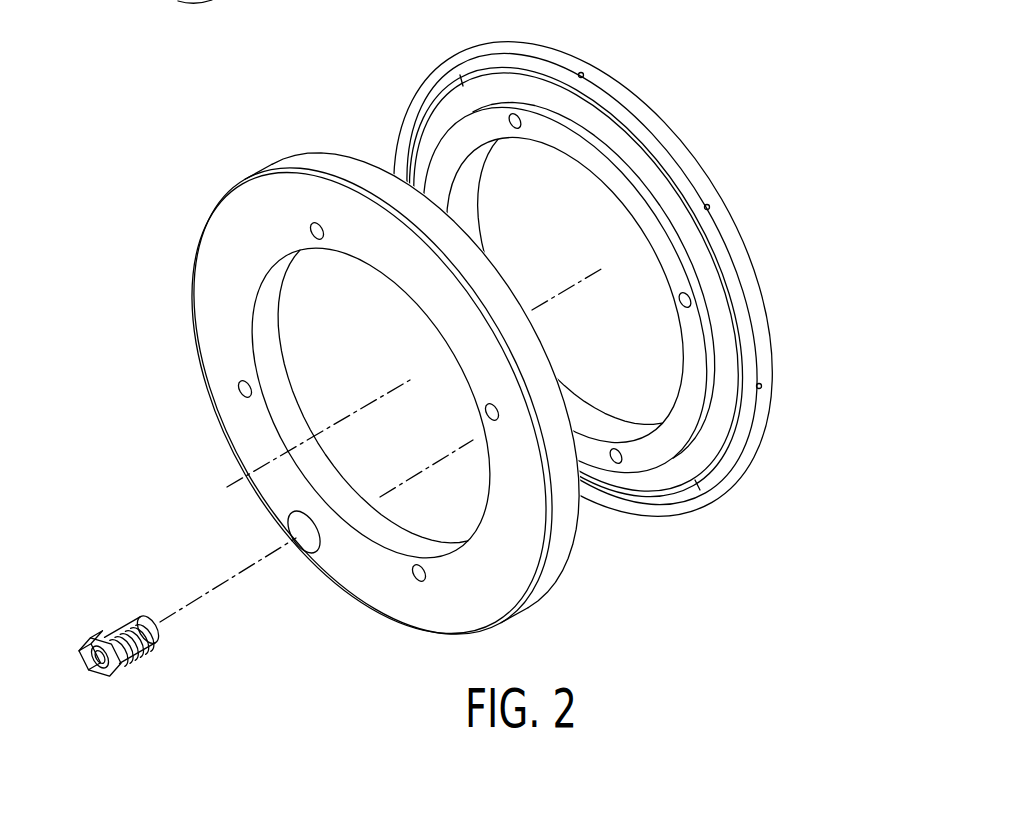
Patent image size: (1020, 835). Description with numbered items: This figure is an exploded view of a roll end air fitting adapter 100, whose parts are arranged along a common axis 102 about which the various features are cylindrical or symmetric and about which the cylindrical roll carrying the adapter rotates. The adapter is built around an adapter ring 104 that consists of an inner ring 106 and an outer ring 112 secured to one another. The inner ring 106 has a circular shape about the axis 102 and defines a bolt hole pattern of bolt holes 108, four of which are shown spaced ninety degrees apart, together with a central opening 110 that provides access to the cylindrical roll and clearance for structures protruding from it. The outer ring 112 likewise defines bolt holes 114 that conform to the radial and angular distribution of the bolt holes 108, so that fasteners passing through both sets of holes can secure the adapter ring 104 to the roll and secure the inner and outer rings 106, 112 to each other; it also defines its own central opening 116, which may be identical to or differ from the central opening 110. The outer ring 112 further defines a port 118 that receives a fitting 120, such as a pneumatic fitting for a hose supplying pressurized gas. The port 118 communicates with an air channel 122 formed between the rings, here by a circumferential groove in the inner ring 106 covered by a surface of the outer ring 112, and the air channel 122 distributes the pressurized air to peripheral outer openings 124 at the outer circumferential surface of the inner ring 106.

The roll end air fitting adapter 100 is at (752, 80).
The axis 102 is at (412, 378).
The adapter ring 104 is at (610, 560).
The inner ring 106 is at (748, 293).
The bolt holes 108 is at (514, 128).
The central opening 110 is at (598, 180).
The outer ring 112 is at (210, 275).
The bolt holes 114 is at (323, 243).
The central opening 116 is at (270, 368).
The port 118 is at (303, 541).
The fitting 120 is at (117, 622).
The air channel 122 is at (438, 97).
The peripheral outer openings 124 is at (581, 73).